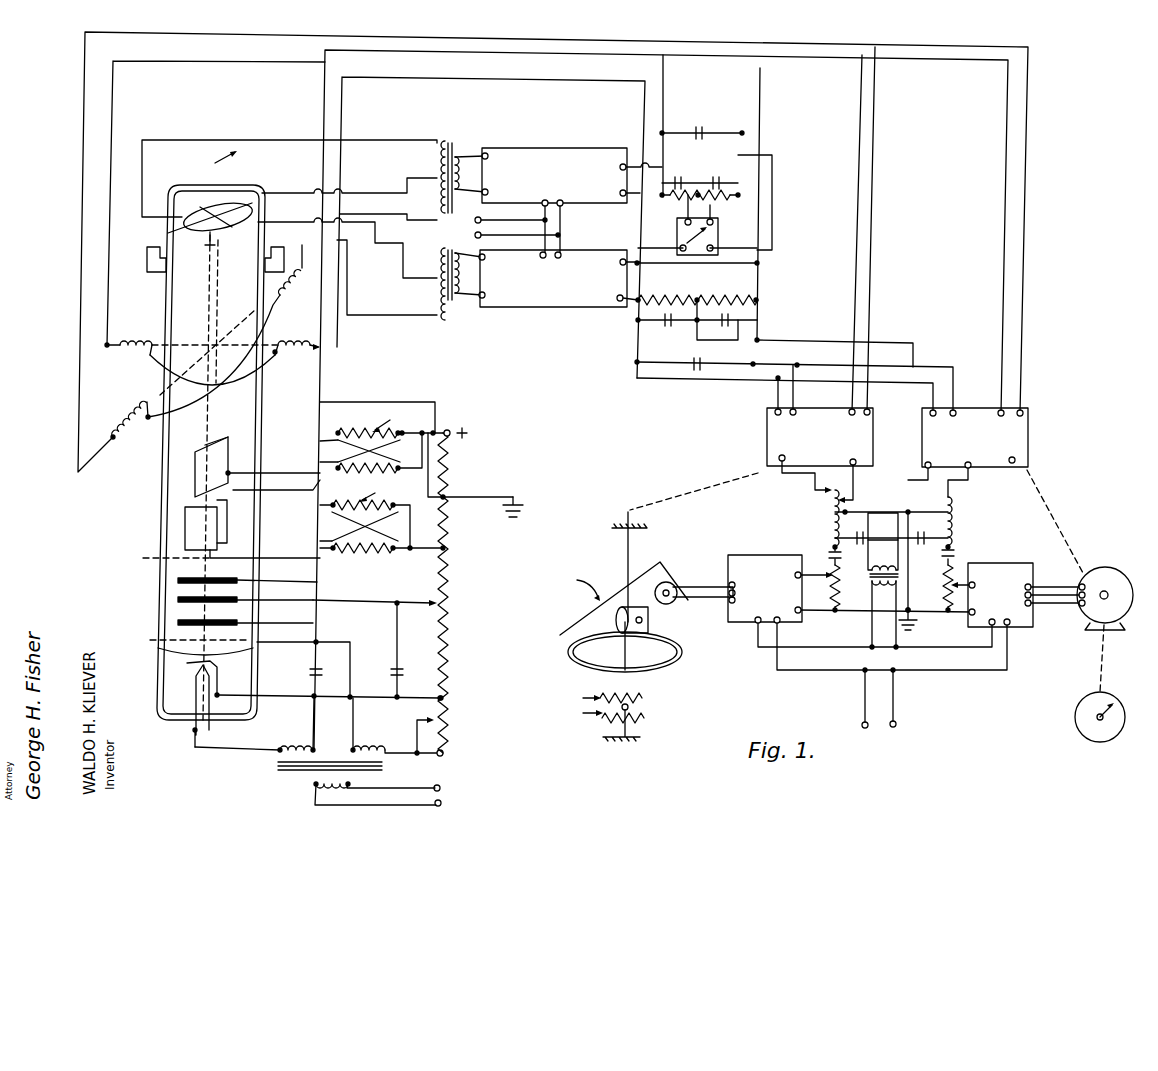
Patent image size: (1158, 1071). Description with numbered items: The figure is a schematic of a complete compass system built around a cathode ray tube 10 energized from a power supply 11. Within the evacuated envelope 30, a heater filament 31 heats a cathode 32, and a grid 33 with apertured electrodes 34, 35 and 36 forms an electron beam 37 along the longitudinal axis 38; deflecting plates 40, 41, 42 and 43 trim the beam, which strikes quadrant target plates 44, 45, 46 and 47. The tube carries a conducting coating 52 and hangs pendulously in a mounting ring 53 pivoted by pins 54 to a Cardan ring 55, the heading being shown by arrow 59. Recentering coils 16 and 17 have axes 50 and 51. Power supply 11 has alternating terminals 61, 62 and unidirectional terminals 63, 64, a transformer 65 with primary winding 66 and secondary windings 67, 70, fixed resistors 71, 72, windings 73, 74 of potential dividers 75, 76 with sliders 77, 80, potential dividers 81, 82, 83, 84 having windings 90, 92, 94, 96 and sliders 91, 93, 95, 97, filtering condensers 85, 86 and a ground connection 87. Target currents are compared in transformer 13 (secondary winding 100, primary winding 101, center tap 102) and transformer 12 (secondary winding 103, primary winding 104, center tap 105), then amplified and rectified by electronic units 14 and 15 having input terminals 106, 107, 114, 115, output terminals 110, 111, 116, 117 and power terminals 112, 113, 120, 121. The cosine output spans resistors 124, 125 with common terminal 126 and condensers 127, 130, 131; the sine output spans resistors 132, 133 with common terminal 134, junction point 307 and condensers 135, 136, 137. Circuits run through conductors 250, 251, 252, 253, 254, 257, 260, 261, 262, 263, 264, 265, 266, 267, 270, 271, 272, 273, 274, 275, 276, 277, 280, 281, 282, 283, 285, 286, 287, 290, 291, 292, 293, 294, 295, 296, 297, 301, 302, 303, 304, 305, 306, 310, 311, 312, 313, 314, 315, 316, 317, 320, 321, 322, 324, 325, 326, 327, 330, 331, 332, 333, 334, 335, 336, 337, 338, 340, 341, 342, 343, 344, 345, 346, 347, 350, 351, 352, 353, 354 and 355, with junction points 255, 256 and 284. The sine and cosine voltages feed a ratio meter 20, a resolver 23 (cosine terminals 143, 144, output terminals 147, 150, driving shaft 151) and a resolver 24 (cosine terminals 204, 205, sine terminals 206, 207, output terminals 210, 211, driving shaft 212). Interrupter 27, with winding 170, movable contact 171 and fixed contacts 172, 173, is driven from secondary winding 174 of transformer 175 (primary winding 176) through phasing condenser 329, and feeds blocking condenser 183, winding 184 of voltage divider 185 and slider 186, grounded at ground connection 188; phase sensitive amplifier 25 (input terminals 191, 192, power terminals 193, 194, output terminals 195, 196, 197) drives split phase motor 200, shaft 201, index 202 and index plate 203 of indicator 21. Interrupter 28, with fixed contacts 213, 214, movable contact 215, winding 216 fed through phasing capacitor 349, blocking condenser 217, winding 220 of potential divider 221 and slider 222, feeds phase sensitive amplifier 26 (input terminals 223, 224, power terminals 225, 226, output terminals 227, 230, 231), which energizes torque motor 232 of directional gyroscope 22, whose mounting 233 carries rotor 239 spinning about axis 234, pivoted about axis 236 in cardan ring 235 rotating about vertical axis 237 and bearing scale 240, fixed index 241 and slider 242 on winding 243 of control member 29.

The cathode ray tube 10 is at (63, 195).
The power supply 11 is at (405, 583).
The transformer 12 is at (440, 141).
The transformer 13 is at (443, 313).
The electronic unit 14 is at (548, 148).
The electronic unit 15 is at (573, 308).
The recentering coil 16 is at (120, 402).
The recentering coil 17 is at (294, 352).
The ratio meter 20 is at (719, 236).
The motor actuated indicator 21 is at (1107, 687).
The directional gyroscope 22 is at (570, 624).
The resolver 23 is at (980, 408).
The resolver 24 is at (820, 395).
The phase sensitive amplifier 25 is at (1005, 563).
The phase sensitive amplifier 26 is at (740, 555).
The interrupter 27 is at (962, 536).
The interrupter 28 is at (822, 522).
The control member 29 is at (603, 716).
The evacuated envelope 30 is at (158, 515).
The heater filament 31 is at (195, 680).
The cathode 32 is at (187, 663).
The control electrode or grid 33 is at (186, 638).
The focusing and accelerating electrode 34 is at (178, 622).
The focusing and accelerating electrode 35 is at (178, 599).
The focusing and accelerating electrode 36 is at (178, 580).
The electron beam 37 is at (166, 557).
The longitudinal axis 38 is at (212, 728).
The deflecting plate 40 is at (187, 515).
The deflecting plate 41 is at (225, 515).
The deflecting plate 42 is at (195, 460).
The deflecting plate 43 is at (232, 450).
The target plate 44 is at (200, 222).
The target plate 45 is at (225, 208).
The target plate 46 is at (190, 205).
The target plate 47 is at (260, 207).
The axis of coil 16 50 is at (253, 318).
The axis of coil 17 51 is at (183, 345).
The electrically conducting coating 52 is at (150, 438).
The mounting ring 53 is at (167, 267).
The pins 54 is at (157, 273).
The Cardan ring 55 is at (285, 260).
The arrow 59 is at (216, 163).
The terminal 61 is at (861, 725).
The terminal 62 is at (896, 724).
The terminal 63 is at (455, 428).
The terminal 64 is at (444, 756).
The transformer 65 is at (283, 769).
The primary winding 66 is at (315, 790).
The secondary winding 67 is at (278, 752).
The secondary winding 70 is at (395, 726).
The fixed resistor 71 is at (452, 458).
The fixed resistor 72 is at (450, 518).
The winding 73 is at (450, 622).
The winding 74 is at (445, 735).
The potential divider 75 is at (420, 647).
The potential divider 76 is at (414, 724).
The slider 77 is at (431, 608).
The slider 80 is at (445, 708).
The potential divider 81 is at (392, 420).
The potential divider 82 is at (377, 492).
The potential divider 83 is at (378, 500).
The potential divider 84 is at (385, 557).
The filtering condenser 85 is at (312, 668).
The filtering condenser 86 is at (397, 665).
The ground connection 87 is at (515, 503).
The winding 90 is at (418, 425).
The slider 91 is at (374, 431).
The winding 92 is at (345, 450).
The slider 93 is at (338, 468).
The winding 94 is at (350, 512).
The slider 95 is at (333, 505).
The winding 96 is at (395, 550).
The slider 97 is at (363, 552).
The secondary winding 100 is at (455, 300).
The primary winding 101 is at (437, 305).
The center tap 102 is at (437, 283).
The secondary winding 103 is at (452, 146).
The primary winding 104 is at (437, 150).
The center tap 105 is at (437, 178).
The input terminal 106 is at (490, 150).
The input terminal 107 is at (483, 195).
The output terminal 110 is at (624, 163).
The output terminal 111 is at (622, 197).
The power terminal 112 is at (543, 205).
The power terminal 113 is at (562, 205).
The input terminal 114 is at (478, 255).
The input terminal 115 is at (486, 298).
The output terminal 116 is at (623, 258).
The output terminal 117 is at (618, 302).
The power terminal 120 is at (718, 235).
The power terminal 121 is at (560, 253).
The resistor 124 is at (662, 200).
The resistor 125 is at (722, 205).
The common terminal 126 is at (700, 206).
The filtering condenser 127 is at (718, 175).
The filtering condenser 130 is at (680, 175).
The filtering condenser 131 is at (709, 123).
The resistor 132 is at (686, 296).
The resistor 133 is at (738, 296).
The common terminal 134 is at (697, 310).
The filtering condenser 135 is at (662, 328).
The filtering condenser 136 is at (697, 338).
The filtering condenser 137 is at (697, 372).
The cosine terminal 143 is at (1005, 410).
The cosine terminal 144 is at (1023, 411).
The output terminal 147 is at (923, 440).
The output terminal 150 is at (972, 462).
The driving shaft 151 is at (1035, 477).
The energizing winding 170 is at (955, 518).
The movable contact 171 is at (953, 507).
The fixed contact 172 is at (940, 500).
The fixed contact 173 is at (953, 501).
The secondary winding 174 is at (898, 562).
The transformer 175 is at (848, 554).
The primary winding 176 is at (896, 578).
The blocking condenser 183 is at (953, 548).
The winding 184 is at (958, 590).
The voltage divider 185 is at (946, 619).
The slider 186 is at (952, 570).
The ground connection 188 is at (921, 620).
The input terminal 191 is at (970, 622).
The input terminal 192 is at (985, 625).
The power terminal 193 is at (1006, 630).
The power terminal 194 is at (995, 625).
The output terminal 195 is at (1035, 585).
The output terminal 196 is at (1035, 595).
The output terminal 197 is at (1026, 602).
The split phase motor 200 is at (1112, 572).
The shaft 201 is at (1108, 658).
The index 202 is at (1116, 704).
The index plate 203 is at (1080, 730).
The cosine terminal 204 is at (856, 408).
The cosine terminal 205 is at (870, 412).
The sine terminal 206 is at (775, 412).
The sine terminal 207 is at (790, 414).
The output terminal 210 is at (812, 455).
The output terminal 211 is at (856, 458).
The driving shaft 212 is at (694, 485).
The fixed contact 213 is at (818, 487).
The fixed contact 214 is at (850, 498).
The movable contact 215 is at (840, 490).
The energizing winding 216 is at (830, 528).
The blocking condenser 217 is at (828, 548).
The winding 220 is at (845, 578).
The potential divider 221 is at (819, 640).
The slider 222 is at (813, 599).
The input terminal 223 is at (795, 572).
The input terminal 224 is at (770, 610).
The power terminal 225 is at (757, 623).
The power terminal 226 is at (775, 659).
The output terminal 227 is at (732, 570).
The output terminal 230 is at (712, 586).
The output terminal 231 is at (700, 575).
The split phase torque motor 232 is at (670, 580).
The mounting 233 is at (660, 595).
The spin axis 234 is at (600, 603).
The cardan ring 235 is at (650, 565).
The pivot axis 236 is at (623, 645).
The vertical axis 237 is at (626, 545).
The rotor 239 is at (620, 635).
The graduated scale 240 is at (670, 670).
The fixed index 241 is at (575, 676).
The slider 242 is at (640, 722).
The winding 243 is at (645, 700).
The conductor 250 is at (410, 784).
The conductor 251 is at (390, 805).
The conductor 252 is at (230, 750).
The conductor 253 is at (307, 722).
The conductor 254 is at (295, 700).
The junction point 255 is at (448, 496).
The junction point 256 is at (444, 697).
The conductor 257 is at (436, 404).
The conductor 260 is at (330, 378).
The conductor 261 is at (403, 278).
The conductor 262 is at (372, 316).
The conductor 263 is at (328, 708).
The conductor 264 is at (418, 696).
The conductor 265 is at (355, 192).
The conductor 266 is at (388, 205).
The conductor 267 is at (262, 140).
The conductor 270 is at (355, 221).
The conductor 271 is at (318, 642).
The conductor 272 is at (352, 680).
The conductor 273 is at (440, 770).
The conductor 274 is at (417, 736).
The conductor 275 is at (330, 612).
The conductor 276 is at (318, 541).
The conductor 277 is at (272, 585).
The conductor 280 is at (338, 600).
The conductor 281 is at (235, 557).
The lead 282 is at (277, 492).
The conductor 283 is at (405, 512).
The junction point 284 is at (447, 548).
The conductor 285 is at (410, 540).
The conductor 286 is at (283, 418).
The conductor 287 is at (290, 450).
The lead 290 is at (460, 158).
The lead 291 is at (459, 190).
The conductor 292 is at (455, 250).
The lead 293 is at (460, 300).
The conductor 294 is at (535, 221).
The conductor 295 is at (561, 233).
The conductor 296 is at (760, 172).
The conductor 297 is at (640, 205).
The conductor 301 is at (772, 222).
The conductor 302 is at (900, 345).
The conductor 303 is at (664, 100).
The conductor 304 is at (65, 388).
The conductor 305 is at (758, 349).
The conductor 306 is at (638, 316).
The common junction point 307 is at (716, 319).
The conductor 310 is at (758, 330).
The conductor 311 is at (640, 285).
The conductor 312 is at (113, 305).
The conductor 313 is at (672, 222).
The conductor 314 is at (760, 196).
The conductor 315 is at (665, 263).
The conductor 316 is at (758, 240).
The conductor 317 is at (1010, 170).
The conductor 320 is at (1025, 190).
The conductor 321 is at (905, 353).
The conductor 322 is at (826, 366).
The conductor 324 is at (960, 480).
The conductor 325 is at (918, 488).
The conductor 326 is at (862, 706).
The conductor 327 is at (896, 694).
The phasing condenser 329 is at (928, 530).
The conductor 330 is at (882, 640).
The conductor 331 is at (882, 622).
The conductor 332 is at (886, 525).
The conductor 333 is at (891, 505).
The conductor 334 is at (990, 660).
The conductor 335 is at (1005, 673).
The conductor 336 is at (1050, 605).
The conductor 337 is at (1070, 598).
The conductor 338 is at (875, 643).
The conductor 340 is at (1078, 604).
The conductor 341 is at (870, 250).
The conductor 342 is at (877, 264).
The conductor 343 is at (776, 388).
The conductor 344 is at (794, 396).
The conductor 345 is at (795, 477).
The conductor 346 is at (858, 478).
The conductor 347 is at (841, 615).
The phasing capacitor 349 is at (871, 530).
The conductor 350 is at (777, 624).
The conductor 351 is at (798, 671).
The conductor 352 is at (828, 671).
The conductor 353 is at (704, 605).
The conductor 354 is at (688, 605).
The conductor 355 is at (700, 605).